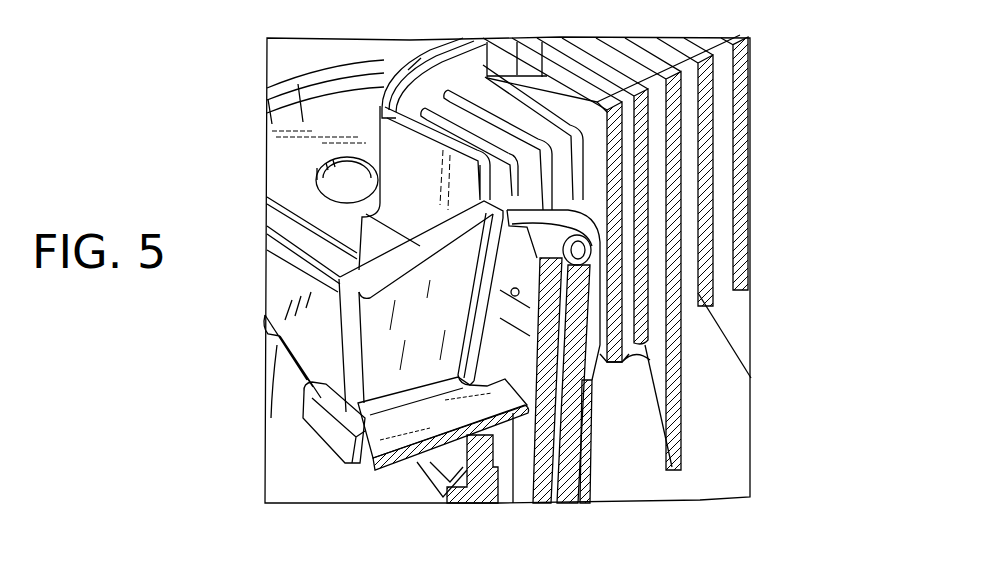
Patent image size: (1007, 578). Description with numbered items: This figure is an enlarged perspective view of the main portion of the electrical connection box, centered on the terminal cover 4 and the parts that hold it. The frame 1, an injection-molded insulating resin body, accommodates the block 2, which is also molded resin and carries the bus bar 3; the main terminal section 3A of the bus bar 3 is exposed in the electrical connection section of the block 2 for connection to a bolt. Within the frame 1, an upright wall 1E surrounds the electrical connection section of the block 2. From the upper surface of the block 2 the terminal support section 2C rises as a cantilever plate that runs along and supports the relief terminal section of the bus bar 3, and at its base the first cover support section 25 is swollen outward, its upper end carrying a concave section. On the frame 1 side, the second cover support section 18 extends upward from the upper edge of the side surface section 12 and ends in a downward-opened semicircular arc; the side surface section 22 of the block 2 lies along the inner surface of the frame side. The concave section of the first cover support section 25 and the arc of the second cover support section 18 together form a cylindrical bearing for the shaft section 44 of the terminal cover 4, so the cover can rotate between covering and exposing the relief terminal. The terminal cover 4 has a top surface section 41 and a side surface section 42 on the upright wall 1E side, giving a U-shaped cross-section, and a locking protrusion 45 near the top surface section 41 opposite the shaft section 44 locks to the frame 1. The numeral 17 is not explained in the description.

The frame 1 is at (346, 50).
The upright wall 1E is at (418, 52).
The block 2 is at (752, 207).
The terminal support section 2C is at (703, 54).
The bus bar 3 is at (306, 100).
The main terminal section 3A is at (302, 158).
The terminal cover 4 is at (376, 466).
The side surface section 12 is at (521, 488).
The guide rails 17 is at (458, 114).
The second cover support section 18 is at (542, 243).
The side surface section 22 is at (562, 503).
The first cover support section 25 is at (563, 348).
The top surface section 41 is at (428, 445).
The side surface section 42 is at (412, 237).
The shaft section 44 is at (603, 364).
The locking protrusion 45 is at (341, 450).